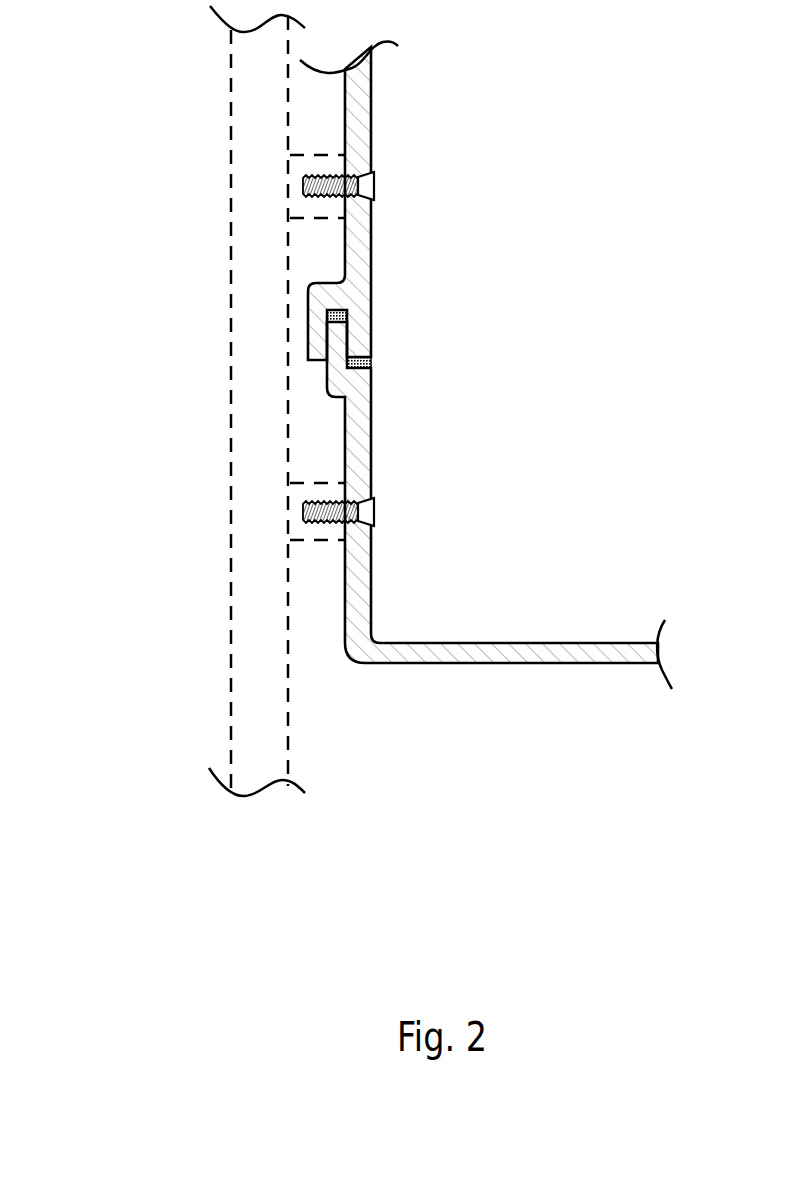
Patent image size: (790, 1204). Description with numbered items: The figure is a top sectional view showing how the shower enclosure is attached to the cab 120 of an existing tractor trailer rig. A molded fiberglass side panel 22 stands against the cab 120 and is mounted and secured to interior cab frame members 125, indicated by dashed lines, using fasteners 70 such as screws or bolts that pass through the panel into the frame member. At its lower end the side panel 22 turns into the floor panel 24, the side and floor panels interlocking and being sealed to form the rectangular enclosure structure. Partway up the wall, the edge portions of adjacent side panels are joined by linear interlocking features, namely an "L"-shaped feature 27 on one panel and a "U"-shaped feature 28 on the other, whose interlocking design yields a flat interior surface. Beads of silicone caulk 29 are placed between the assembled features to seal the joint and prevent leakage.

The side panel 22 is at (362, 217).
The floor panel 24 is at (479, 655).
The "L"-shaped feature 27 is at (345, 379).
The "U"-shaped feature 28 is at (365, 319).
The caulk 29 is at (346, 314).
The fastener 70 is at (376, 183).
The cab 120 is at (228, 362).
The cab frame member 125 is at (302, 203).